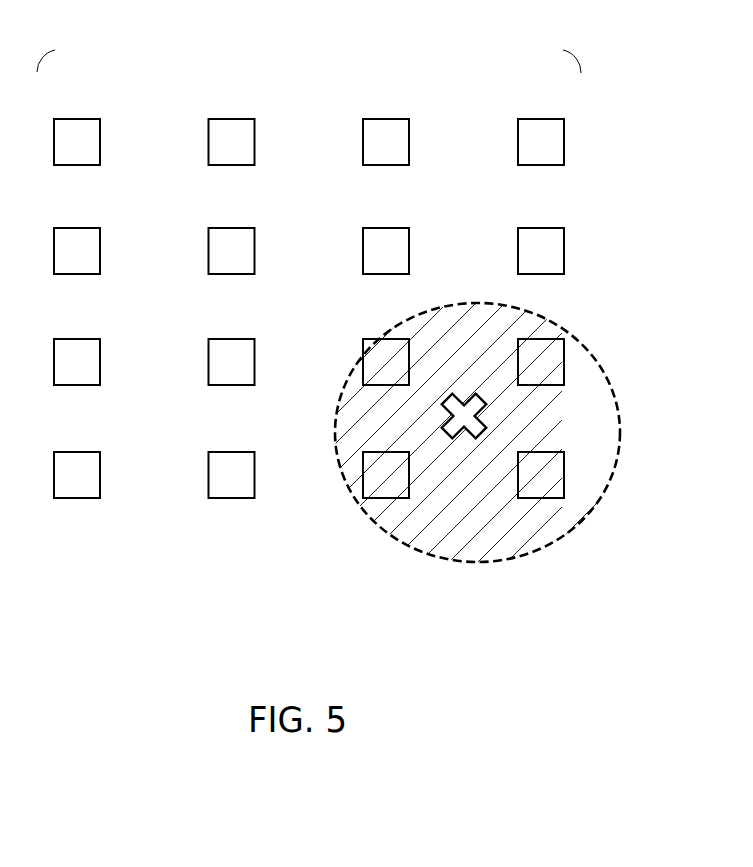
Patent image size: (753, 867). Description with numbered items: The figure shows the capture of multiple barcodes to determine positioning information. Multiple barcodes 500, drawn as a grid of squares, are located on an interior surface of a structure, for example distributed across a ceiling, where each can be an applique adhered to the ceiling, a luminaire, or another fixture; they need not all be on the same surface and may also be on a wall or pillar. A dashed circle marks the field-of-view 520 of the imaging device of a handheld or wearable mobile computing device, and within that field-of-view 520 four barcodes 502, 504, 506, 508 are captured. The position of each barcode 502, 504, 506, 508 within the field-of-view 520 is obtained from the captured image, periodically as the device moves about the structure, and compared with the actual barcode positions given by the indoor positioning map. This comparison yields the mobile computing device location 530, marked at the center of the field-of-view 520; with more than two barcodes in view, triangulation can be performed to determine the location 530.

The multiple barcodes 500 is at (327, 50).
The barcode 502 is at (393, 498).
The barcode 504 is at (537, 498).
The barcode 506 is at (387, 338).
The barcode 508 is at (532, 338).
The field-of-view 520 is at (612, 489).
The mobile computing device location 530 is at (488, 415).